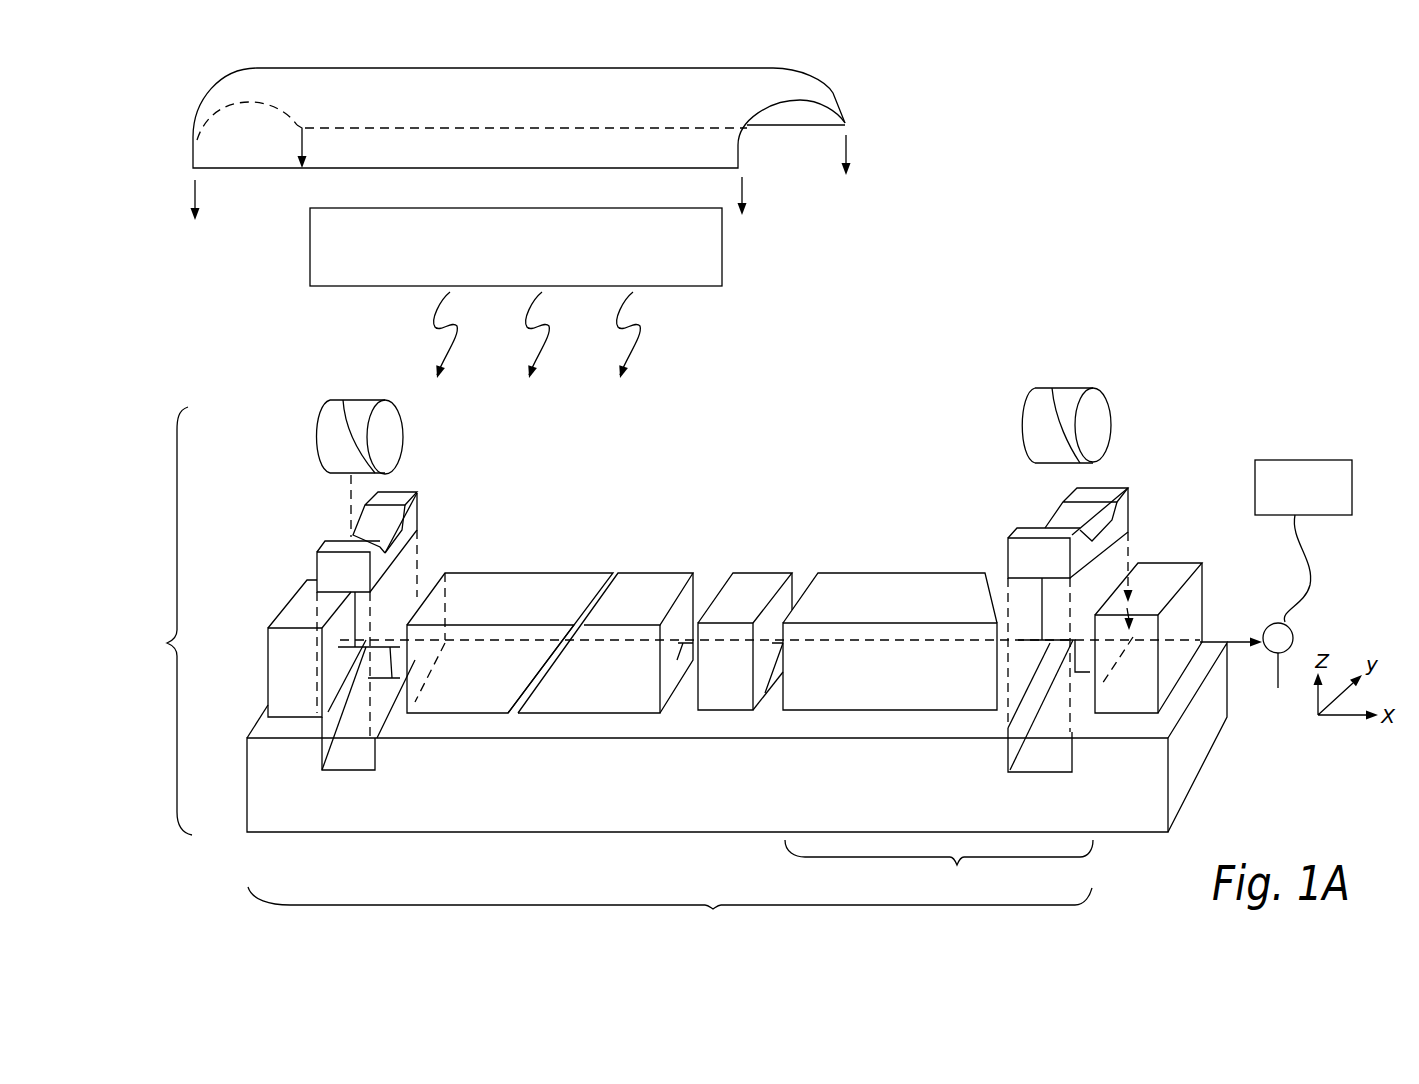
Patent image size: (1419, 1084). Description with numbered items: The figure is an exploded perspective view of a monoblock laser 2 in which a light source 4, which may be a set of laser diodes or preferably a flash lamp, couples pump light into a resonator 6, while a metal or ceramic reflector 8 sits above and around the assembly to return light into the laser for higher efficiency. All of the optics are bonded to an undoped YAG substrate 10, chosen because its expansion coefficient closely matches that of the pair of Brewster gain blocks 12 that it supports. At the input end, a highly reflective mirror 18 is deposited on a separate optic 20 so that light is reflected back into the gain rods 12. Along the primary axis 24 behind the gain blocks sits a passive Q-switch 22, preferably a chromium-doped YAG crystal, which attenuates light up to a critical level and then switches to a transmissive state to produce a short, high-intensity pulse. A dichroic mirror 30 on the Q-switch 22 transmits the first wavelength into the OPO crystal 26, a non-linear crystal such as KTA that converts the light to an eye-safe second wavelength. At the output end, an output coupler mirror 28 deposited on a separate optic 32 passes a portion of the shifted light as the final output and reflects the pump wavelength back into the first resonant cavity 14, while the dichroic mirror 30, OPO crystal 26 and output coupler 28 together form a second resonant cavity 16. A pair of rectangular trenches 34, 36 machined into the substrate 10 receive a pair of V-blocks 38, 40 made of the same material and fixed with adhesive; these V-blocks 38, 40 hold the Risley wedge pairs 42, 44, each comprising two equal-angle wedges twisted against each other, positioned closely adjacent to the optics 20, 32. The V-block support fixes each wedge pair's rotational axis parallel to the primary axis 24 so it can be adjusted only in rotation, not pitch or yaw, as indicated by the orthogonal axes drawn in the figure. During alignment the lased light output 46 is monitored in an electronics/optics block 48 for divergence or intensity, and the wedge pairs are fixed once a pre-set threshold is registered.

The monoblock laser 2 is at (952, 314).
The light source 4 is at (722, 250).
The resonator 6 is at (167, 621).
The reflector 8 is at (663, 115).
The substrate 10 is at (859, 784).
The Brewster gain blocks 12 is at (475, 669).
The first resonant cavity 14 is at (670, 914).
The second resonant cavity 16 is at (939, 866).
The highly reflective mirror 18 is at (271, 653).
The separate optic 20 is at (284, 687).
The passive Q-switch 22 is at (712, 672).
The primary axis 24 is at (385, 650).
The OPO crystal 26 is at (879, 674).
The output coupler mirror 28 is at (1127, 590).
The dichroic mirror 30 is at (805, 637).
The separate optic 32 is at (1119, 679).
The rectangular trench 34 is at (1072, 753).
The rectangular trench 36 is at (318, 753).
The V-block 38 is at (1130, 502).
The V-block 40 is at (418, 519).
The Risley wedge pair 42 is at (403, 437).
The Risley wedge pair 44 is at (1112, 420).
The lased light output 46 is at (1238, 640).
The electronics/optics block 48 is at (1293, 630).